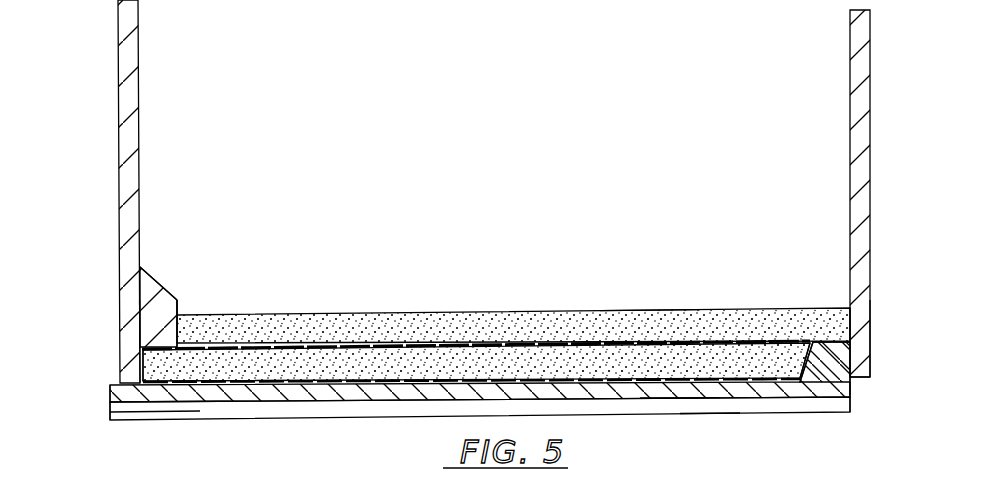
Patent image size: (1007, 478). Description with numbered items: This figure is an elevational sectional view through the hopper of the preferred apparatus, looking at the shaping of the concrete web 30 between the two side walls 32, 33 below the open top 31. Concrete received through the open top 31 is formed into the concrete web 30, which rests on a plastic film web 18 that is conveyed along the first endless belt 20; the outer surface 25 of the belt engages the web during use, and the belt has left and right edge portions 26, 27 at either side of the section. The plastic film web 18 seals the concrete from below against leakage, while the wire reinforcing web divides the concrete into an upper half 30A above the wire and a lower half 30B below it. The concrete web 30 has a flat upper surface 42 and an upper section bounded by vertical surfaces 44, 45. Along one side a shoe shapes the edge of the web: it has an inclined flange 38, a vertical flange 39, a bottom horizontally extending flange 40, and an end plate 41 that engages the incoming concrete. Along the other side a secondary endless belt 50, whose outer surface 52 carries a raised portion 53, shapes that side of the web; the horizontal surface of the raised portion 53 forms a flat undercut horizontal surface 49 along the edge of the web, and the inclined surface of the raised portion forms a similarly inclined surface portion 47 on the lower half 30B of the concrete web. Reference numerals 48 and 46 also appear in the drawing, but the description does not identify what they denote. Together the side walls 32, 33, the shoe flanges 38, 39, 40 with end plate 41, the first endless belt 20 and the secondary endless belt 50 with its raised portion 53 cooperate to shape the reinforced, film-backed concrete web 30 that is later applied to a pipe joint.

The side wall 32 is at (138, 55).
The side wall 33 is at (849, 57).
The open top 31 is at (574, 107).
The end plate 41 is at (148, 278).
The inclined flange 38 is at (158, 300).
The inclined surface portion 47 is at (177, 302).
The vertical flange 39 is at (180, 308).
The bottom horizontally extending flange 40 is at (122, 308).
The braze interlayer 48 is at (140, 350).
The vertical surface 45 is at (140, 353).
The left edge portion 26 is at (110, 407).
The outer surface 52 is at (171, 404).
The plastic film web 18 is at (257, 397).
The lower half of web 30B is at (380, 380).
The concrete web 30 is at (380, 323).
The upper half of web 30A is at (487, 318).
The upper surface 42 is at (637, 311).
The raised portion 53 is at (840, 340).
The vertical surface 44 is at (870, 355).
The flat undercut horizontal surface 49 is at (857, 375).
The first endless belt 20 is at (677, 402).
The outer surface 25 is at (710, 415).
The secondary endless belt 50 is at (763, 398).
The right edge portion 27 is at (852, 402).
The corner of base plate 46 is at (850, 393).